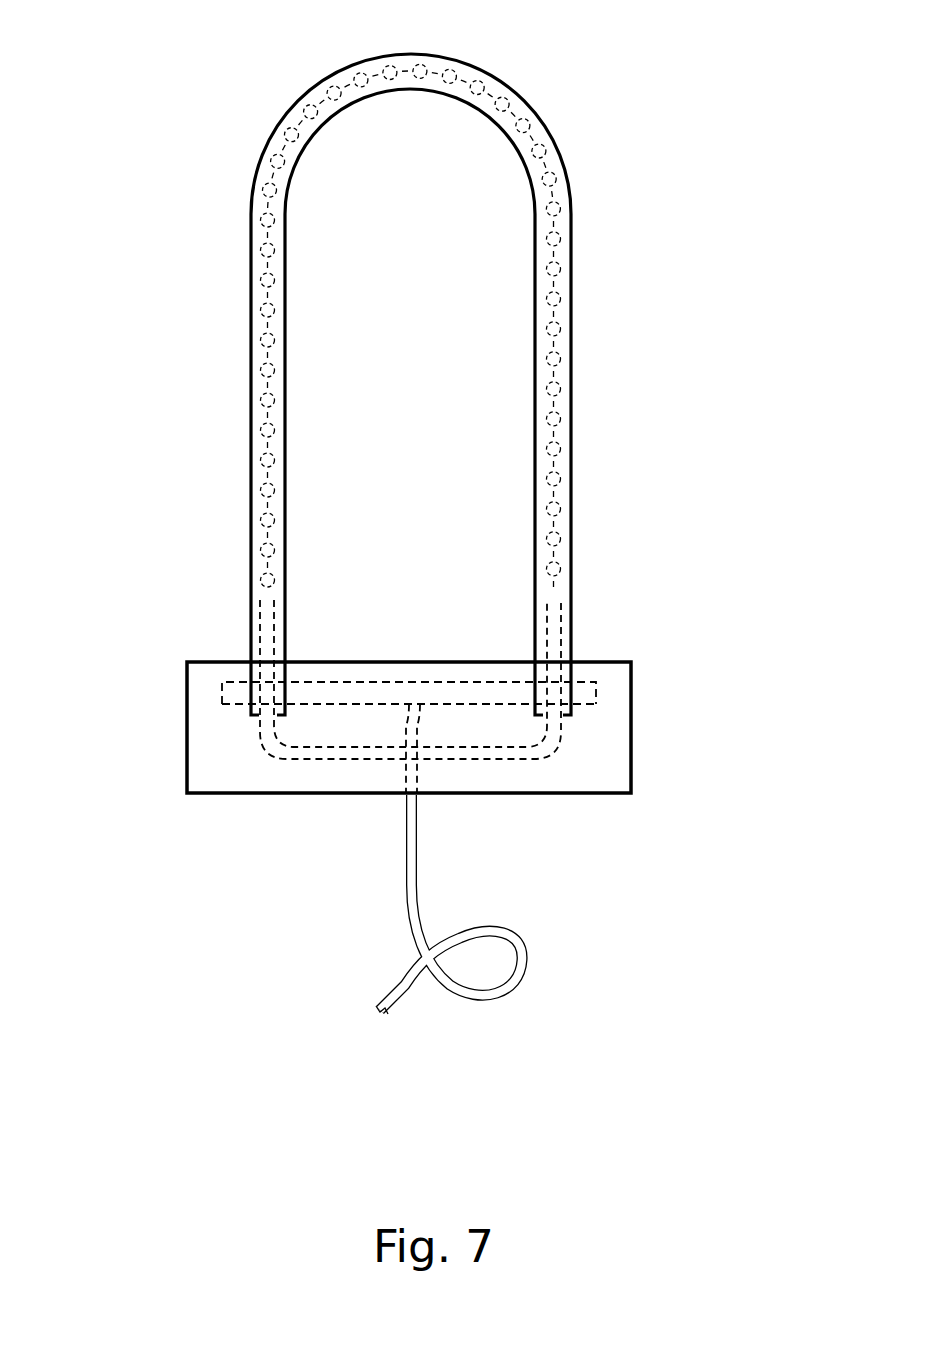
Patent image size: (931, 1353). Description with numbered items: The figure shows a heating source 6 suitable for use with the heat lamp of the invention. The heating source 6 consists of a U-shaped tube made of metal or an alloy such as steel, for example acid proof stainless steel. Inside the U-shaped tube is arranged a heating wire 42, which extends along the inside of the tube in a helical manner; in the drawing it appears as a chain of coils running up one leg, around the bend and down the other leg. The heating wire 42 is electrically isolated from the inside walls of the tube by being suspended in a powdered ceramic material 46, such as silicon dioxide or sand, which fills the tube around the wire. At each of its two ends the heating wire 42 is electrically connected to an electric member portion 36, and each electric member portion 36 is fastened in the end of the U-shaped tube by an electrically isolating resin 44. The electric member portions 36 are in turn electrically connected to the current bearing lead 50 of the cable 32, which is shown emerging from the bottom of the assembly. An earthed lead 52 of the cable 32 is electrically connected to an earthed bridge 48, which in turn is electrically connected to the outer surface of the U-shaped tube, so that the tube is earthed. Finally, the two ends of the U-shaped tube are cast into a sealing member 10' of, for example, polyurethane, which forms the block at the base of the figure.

The heating source 6 is at (412, 367).
The heating wire 42 is at (515, 100).
The powdered ceramic material 46 is at (253, 249).
The electric member portion 36 is at (263, 625).
The electrically isolating resin 44 is at (560, 622).
The earthed bridge 48 is at (490, 690).
The current bearing lead 50 is at (323, 757).
The earthed lead 52 is at (408, 740).
The cable 32 is at (412, 887).
The sealing member 10' is at (352, 781).